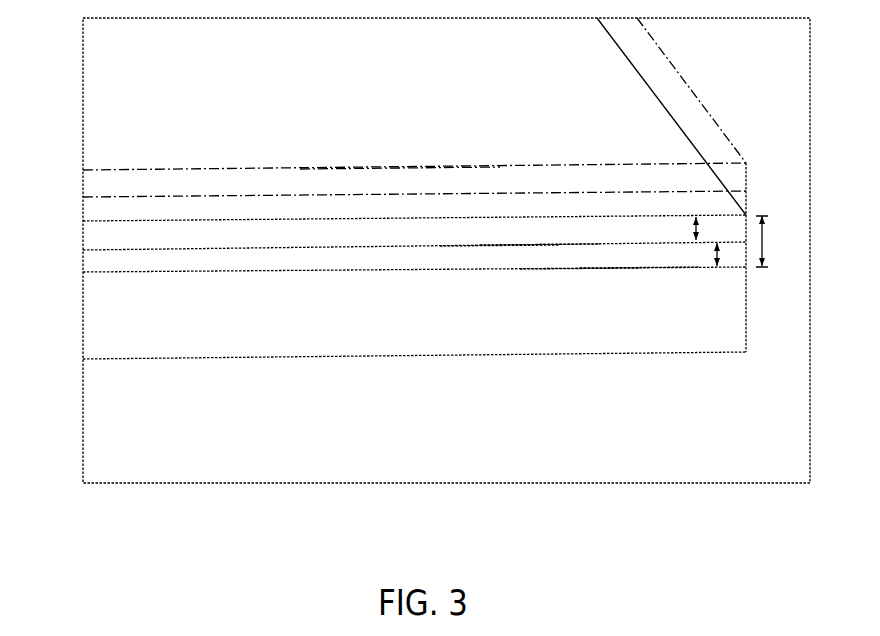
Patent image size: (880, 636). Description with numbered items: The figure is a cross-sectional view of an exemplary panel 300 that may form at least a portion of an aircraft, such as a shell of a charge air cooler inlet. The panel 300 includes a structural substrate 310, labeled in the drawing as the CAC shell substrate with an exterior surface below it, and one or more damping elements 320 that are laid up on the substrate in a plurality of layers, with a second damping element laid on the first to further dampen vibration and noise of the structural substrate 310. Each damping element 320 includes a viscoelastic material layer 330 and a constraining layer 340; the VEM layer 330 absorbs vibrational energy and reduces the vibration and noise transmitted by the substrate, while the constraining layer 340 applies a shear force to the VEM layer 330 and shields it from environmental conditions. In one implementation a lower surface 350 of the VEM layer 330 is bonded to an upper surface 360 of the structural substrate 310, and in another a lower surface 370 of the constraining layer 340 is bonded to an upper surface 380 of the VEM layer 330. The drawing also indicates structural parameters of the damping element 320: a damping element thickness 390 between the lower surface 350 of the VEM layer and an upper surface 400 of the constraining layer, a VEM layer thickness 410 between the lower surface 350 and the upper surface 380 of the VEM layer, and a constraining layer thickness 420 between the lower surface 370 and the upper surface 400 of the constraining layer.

The panel 300 is at (50, 135).
The structural substrate 310 is at (108, 323).
The damping element 320 is at (76, 210).
The viscoelastic material (VEM) layer 330 is at (108, 265).
The constraining layer 340 is at (108, 240).
The lower surface of VEM layer 350 is at (600, 268).
The upper surface of structural substrate 360 is at (618, 268).
The lower surface of constraining layer 370 is at (515, 247).
The upper surface of VEM layer 380 is at (533, 243).
The damping element thickness 390 is at (766, 240).
The upper surface of constraining layer 400 is at (387, 163).
The VEM layer thickness 410 is at (720, 257).
The constraining layer thickness 420 is at (700, 227).